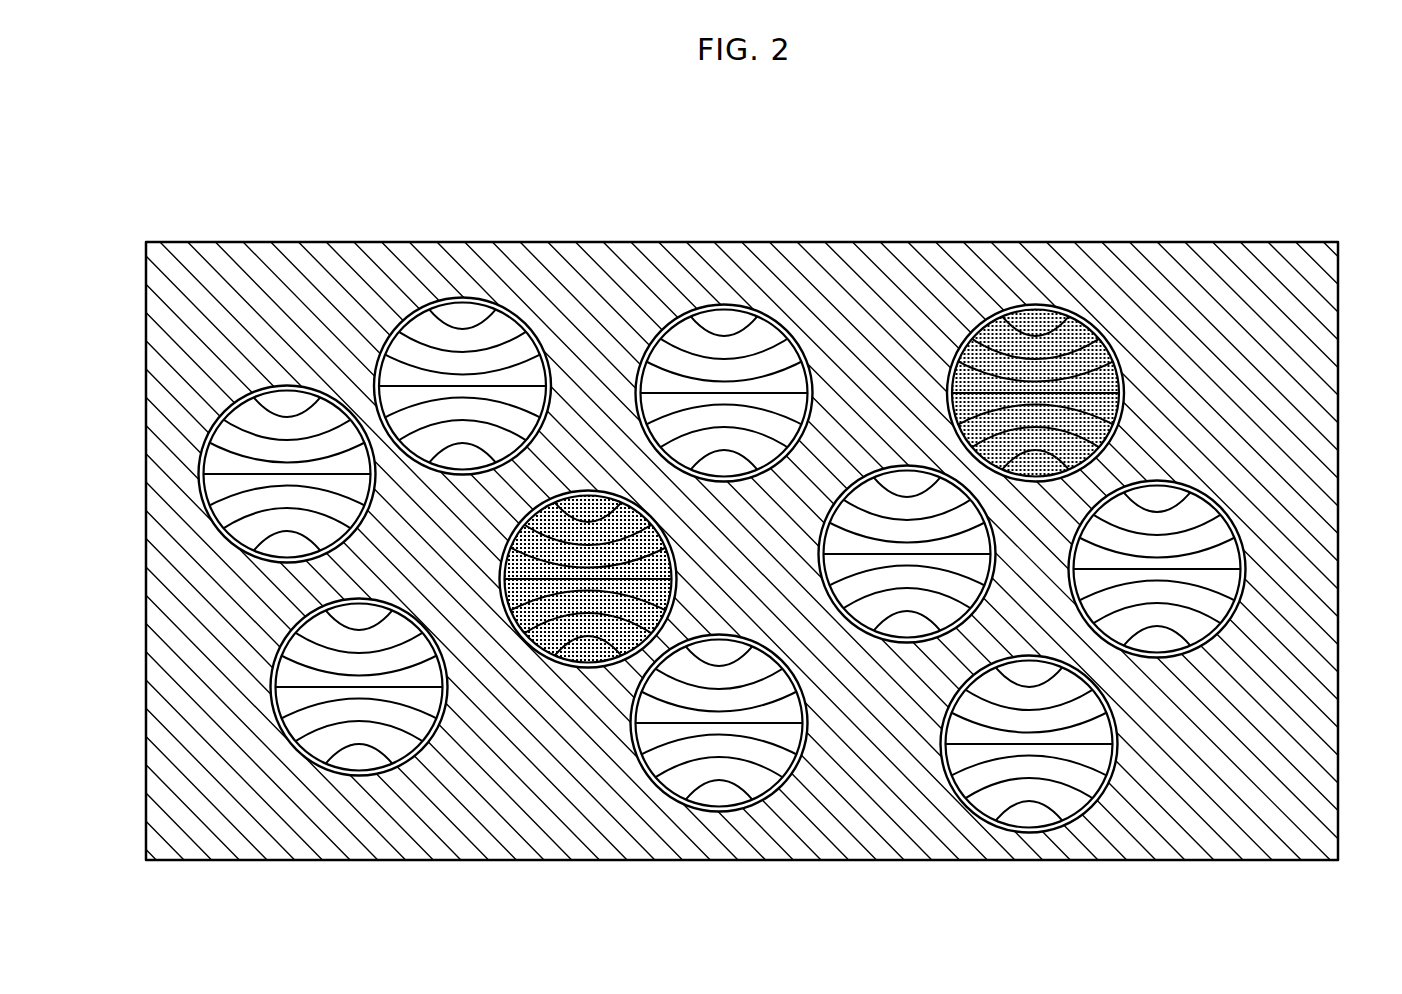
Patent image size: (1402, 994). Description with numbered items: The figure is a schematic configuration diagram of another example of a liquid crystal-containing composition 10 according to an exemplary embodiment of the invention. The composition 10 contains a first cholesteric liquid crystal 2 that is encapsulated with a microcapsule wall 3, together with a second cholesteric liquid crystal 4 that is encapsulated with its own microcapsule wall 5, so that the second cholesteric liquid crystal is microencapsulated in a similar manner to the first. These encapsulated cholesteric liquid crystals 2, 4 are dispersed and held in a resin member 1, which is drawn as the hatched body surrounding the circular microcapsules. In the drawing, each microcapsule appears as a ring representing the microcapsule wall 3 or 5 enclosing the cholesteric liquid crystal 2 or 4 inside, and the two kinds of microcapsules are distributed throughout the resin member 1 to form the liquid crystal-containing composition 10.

The resin member 1 is at (1323, 319).
The cholesteric liquid crystal 2 is at (418, 343).
The microcapsule wall 3 is at (482, 300).
The cholesteric liquid crystal 4 is at (978, 352).
The microcapsule wall 5 is at (1054, 307).
The liquid crystal-containing composition 10 is at (745, 524).